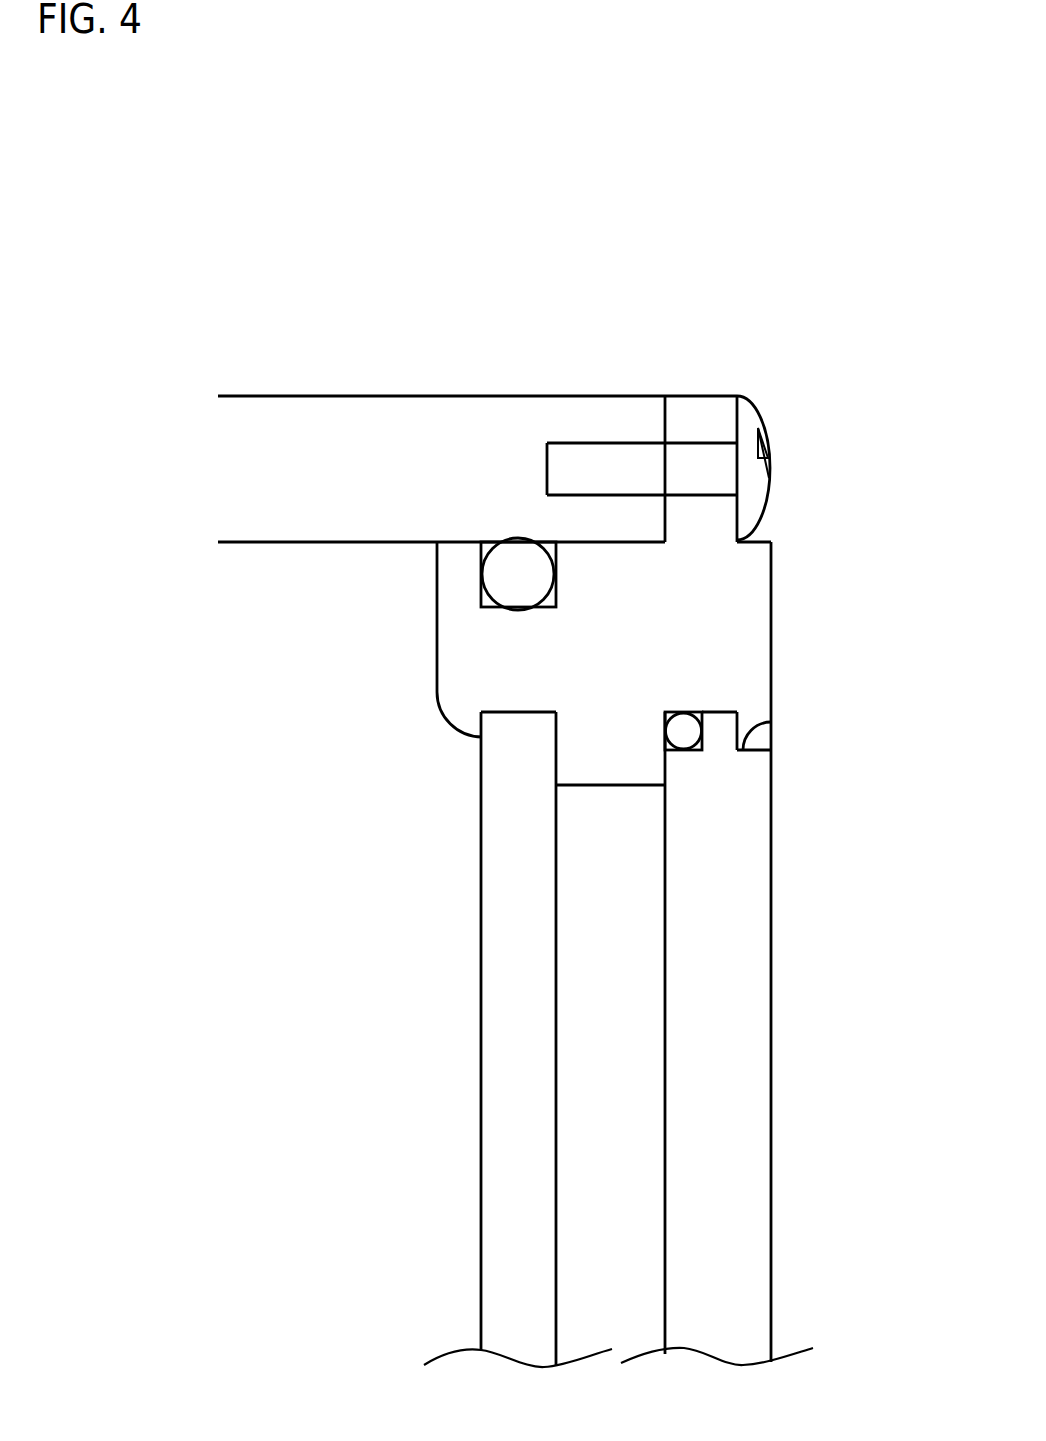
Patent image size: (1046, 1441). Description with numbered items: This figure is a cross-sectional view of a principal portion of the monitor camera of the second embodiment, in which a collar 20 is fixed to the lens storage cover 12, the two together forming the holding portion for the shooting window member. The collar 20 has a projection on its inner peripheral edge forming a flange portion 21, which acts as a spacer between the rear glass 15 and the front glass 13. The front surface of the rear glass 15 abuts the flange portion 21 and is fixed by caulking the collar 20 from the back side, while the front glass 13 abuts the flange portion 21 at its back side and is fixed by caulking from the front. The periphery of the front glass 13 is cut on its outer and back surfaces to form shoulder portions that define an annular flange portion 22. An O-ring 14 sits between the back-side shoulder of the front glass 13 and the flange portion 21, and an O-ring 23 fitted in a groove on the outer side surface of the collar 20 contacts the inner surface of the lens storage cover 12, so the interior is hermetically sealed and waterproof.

The lens storage cover 12 is at (477, 395).
The front glass 13 is at (770, 1052).
The O-ring 14 is at (686, 722).
The rear glass 15 is at (480, 1075).
The collar 20 is at (437, 613).
The flange portion 21 is at (597, 769).
The annular flange portion 22 is at (718, 732).
The O-ring 23 is at (514, 572).